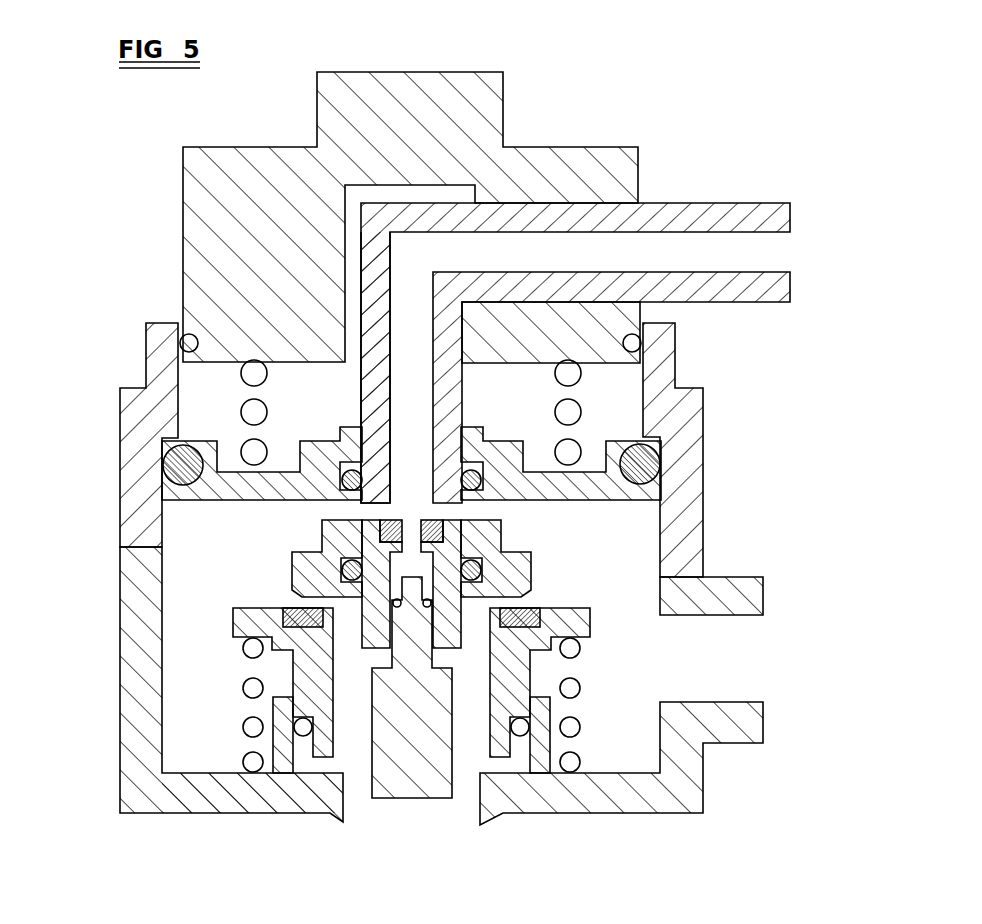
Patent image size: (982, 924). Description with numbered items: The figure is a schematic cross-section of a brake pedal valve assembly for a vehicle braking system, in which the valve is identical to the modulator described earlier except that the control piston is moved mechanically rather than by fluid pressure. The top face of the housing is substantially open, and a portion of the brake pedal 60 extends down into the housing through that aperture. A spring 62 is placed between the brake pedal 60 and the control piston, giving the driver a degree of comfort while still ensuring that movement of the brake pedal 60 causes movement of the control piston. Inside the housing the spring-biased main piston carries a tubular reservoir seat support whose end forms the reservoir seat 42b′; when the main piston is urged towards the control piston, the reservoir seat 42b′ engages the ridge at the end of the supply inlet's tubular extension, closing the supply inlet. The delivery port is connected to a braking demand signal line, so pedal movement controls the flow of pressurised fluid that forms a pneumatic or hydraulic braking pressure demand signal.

The brake pedal 60 is at (440, 75).
The spring 62 is at (648, 385).
The reservoir seat 42b′ is at (443, 546).